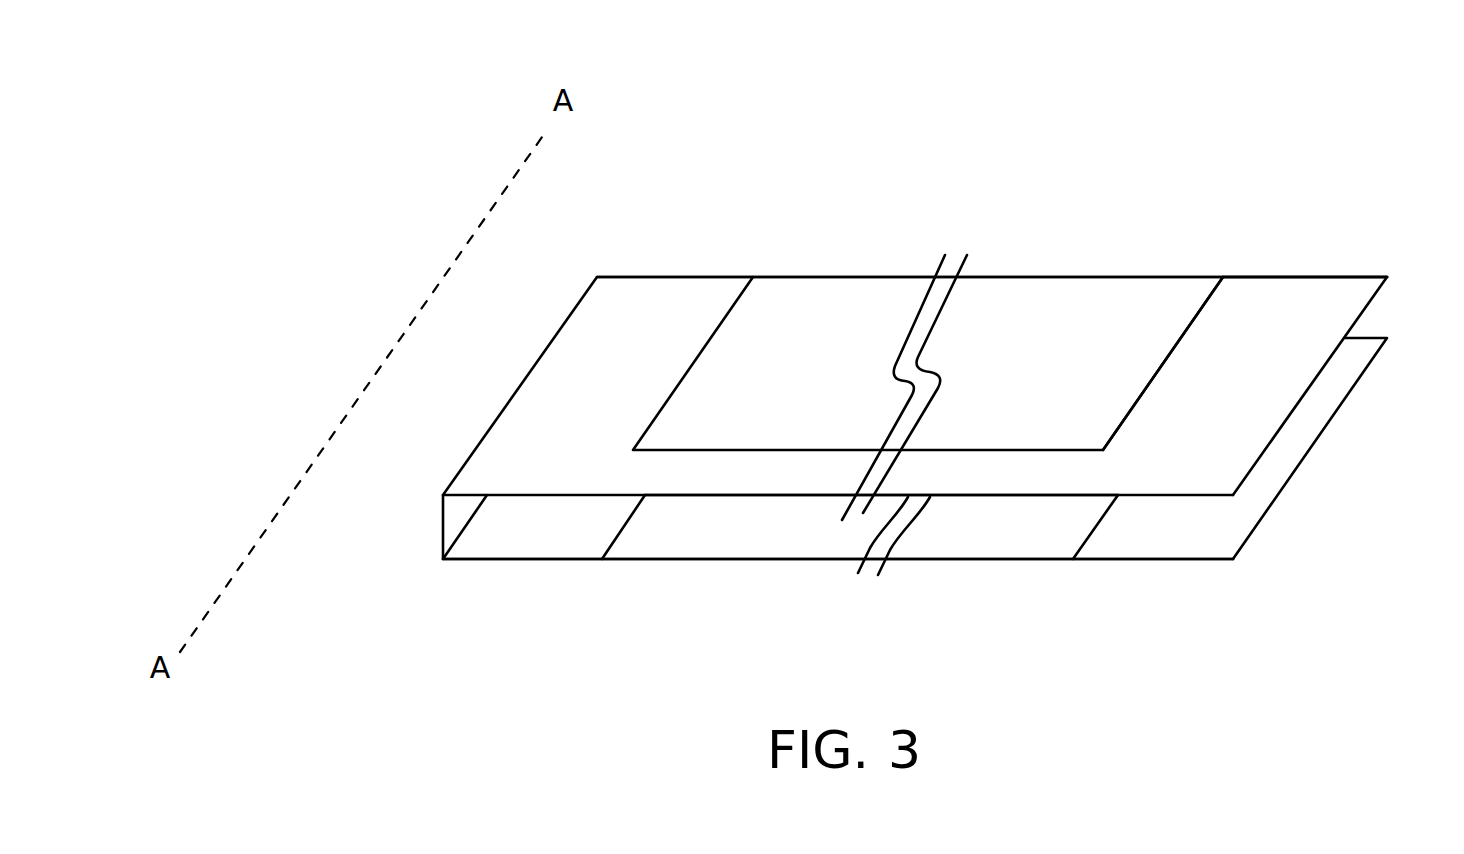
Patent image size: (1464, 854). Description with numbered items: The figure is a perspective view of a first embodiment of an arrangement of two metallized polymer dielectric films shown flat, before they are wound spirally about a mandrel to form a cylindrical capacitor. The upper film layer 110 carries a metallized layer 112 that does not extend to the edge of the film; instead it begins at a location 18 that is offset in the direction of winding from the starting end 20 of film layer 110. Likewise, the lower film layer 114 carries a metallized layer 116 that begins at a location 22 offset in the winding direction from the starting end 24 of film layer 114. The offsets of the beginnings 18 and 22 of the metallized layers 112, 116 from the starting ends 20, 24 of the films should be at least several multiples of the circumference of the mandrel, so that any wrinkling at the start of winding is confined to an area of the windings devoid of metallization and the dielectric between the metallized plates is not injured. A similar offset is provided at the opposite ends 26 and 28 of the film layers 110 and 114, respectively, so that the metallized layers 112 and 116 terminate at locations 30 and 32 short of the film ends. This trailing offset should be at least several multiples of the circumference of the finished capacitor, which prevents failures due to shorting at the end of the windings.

The location 18 is at (729, 308).
The starting end 20 is at (510, 398).
The location 22 is at (617, 536).
The starting end 24 is at (462, 532).
The end 26 is at (1372, 300).
The end 28 is at (1299, 465).
The location 30 is at (1210, 299).
The location 32 is at (1091, 533).
The film layer 110 is at (636, 277).
The metallized layer 112 is at (853, 290).
The film layer 114 is at (475, 560).
The metallized layer 116 is at (757, 537).